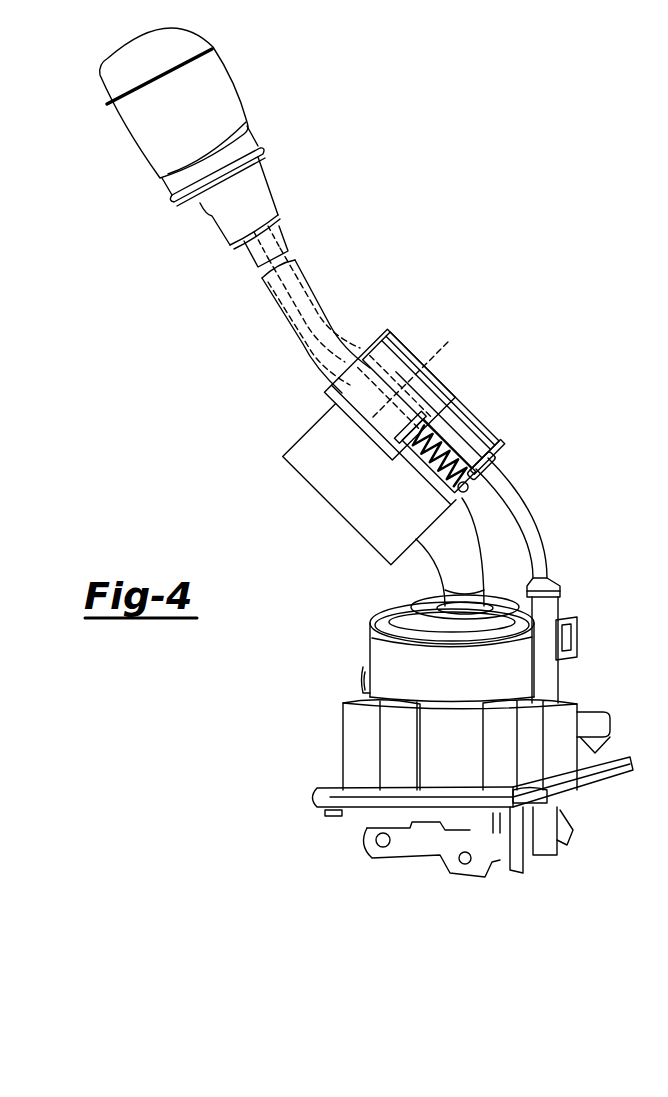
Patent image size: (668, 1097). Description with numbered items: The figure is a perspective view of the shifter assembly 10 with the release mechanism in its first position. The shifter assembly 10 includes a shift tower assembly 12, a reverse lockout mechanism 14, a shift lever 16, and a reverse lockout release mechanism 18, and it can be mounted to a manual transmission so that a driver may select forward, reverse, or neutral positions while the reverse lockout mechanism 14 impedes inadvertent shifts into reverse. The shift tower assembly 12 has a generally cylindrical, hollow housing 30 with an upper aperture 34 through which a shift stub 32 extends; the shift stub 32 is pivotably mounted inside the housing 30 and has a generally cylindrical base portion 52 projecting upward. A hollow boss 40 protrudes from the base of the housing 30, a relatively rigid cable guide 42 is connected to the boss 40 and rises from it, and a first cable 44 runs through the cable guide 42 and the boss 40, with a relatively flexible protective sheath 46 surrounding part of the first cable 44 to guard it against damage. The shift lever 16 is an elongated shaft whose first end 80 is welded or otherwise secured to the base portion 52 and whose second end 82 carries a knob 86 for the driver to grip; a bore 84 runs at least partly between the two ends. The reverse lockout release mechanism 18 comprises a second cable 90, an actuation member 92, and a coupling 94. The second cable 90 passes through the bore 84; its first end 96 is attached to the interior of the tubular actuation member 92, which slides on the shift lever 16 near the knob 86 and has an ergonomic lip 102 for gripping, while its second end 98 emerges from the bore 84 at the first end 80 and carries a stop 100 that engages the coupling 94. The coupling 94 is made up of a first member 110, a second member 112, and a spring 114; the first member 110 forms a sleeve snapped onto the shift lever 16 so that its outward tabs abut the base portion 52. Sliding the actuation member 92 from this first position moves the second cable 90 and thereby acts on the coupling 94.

The shifter assembly 10 is at (363, 152).
The shift tower assembly 12 is at (310, 707).
The reverse lockout mechanism 14 is at (577, 823).
The shift lever 16 is at (247, 265).
The reverse lockout release mechanism 18 is at (543, 427).
The housing 30 is at (383, 652).
The shift stub 32 is at (480, 572).
The upper aperture 34 is at (427, 607).
The boss 40 is at (563, 722).
The cable guide 42 is at (560, 590).
The first cable 44 is at (420, 397).
The protective sheath 46 is at (535, 522).
The base portion 52 is at (340, 503).
The first end 80 is at (373, 417).
The second end 82 is at (280, 224).
The bore 84 is at (275, 302).
The knob 86 is at (237, 103).
The second cable 90 is at (292, 333).
The actuation member 92 is at (268, 195).
The coupling 94 is at (420, 337).
The first end 96 is at (240, 252).
The second end 98 is at (473, 470).
The stop 100 is at (475, 478).
The lip 102 is at (262, 147).
The first member 110 is at (340, 410).
The second member 112 is at (467, 402).
The spring 114 is at (423, 470).